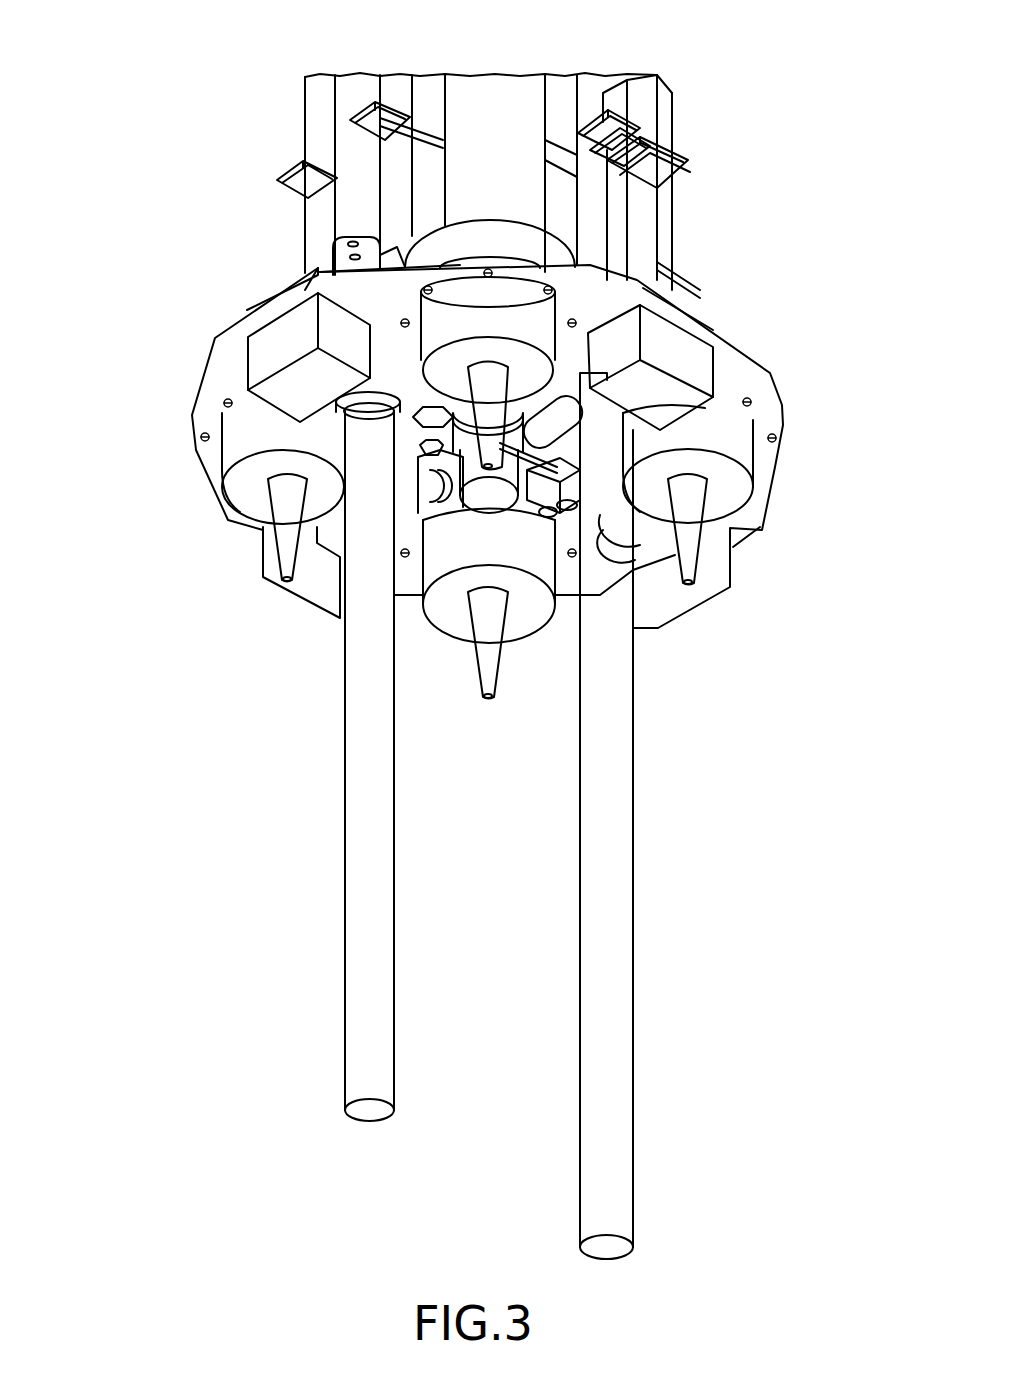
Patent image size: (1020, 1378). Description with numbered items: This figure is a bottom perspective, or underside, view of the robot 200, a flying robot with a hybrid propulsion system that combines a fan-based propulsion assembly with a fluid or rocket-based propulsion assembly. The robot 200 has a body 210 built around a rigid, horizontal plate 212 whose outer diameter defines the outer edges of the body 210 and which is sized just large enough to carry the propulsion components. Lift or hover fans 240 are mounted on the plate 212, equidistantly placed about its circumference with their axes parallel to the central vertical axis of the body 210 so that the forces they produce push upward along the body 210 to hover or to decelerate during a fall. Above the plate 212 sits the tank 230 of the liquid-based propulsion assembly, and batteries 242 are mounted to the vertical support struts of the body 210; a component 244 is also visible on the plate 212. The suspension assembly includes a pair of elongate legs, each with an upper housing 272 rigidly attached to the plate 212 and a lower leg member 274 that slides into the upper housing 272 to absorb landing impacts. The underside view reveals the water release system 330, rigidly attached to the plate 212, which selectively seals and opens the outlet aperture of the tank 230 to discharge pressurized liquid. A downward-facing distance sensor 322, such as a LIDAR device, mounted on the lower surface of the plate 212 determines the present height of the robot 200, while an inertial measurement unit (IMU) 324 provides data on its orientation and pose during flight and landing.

The robot 200 is at (172, 91).
The body 210 is at (190, 331).
The plate 212 is at (215, 375).
The tank 230 is at (522, 86).
The hover fans 240 is at (765, 495).
The batteries 242 is at (308, 118).
The electronics box 244 is at (720, 360).
The upper housing 272 is at (358, 86).
The lower leg member 274 is at (366, 1005).
The distance sensor 322 is at (558, 523).
The inertial measurement unit (IMU) 324 is at (420, 427).
The water release system 330 is at (552, 427).